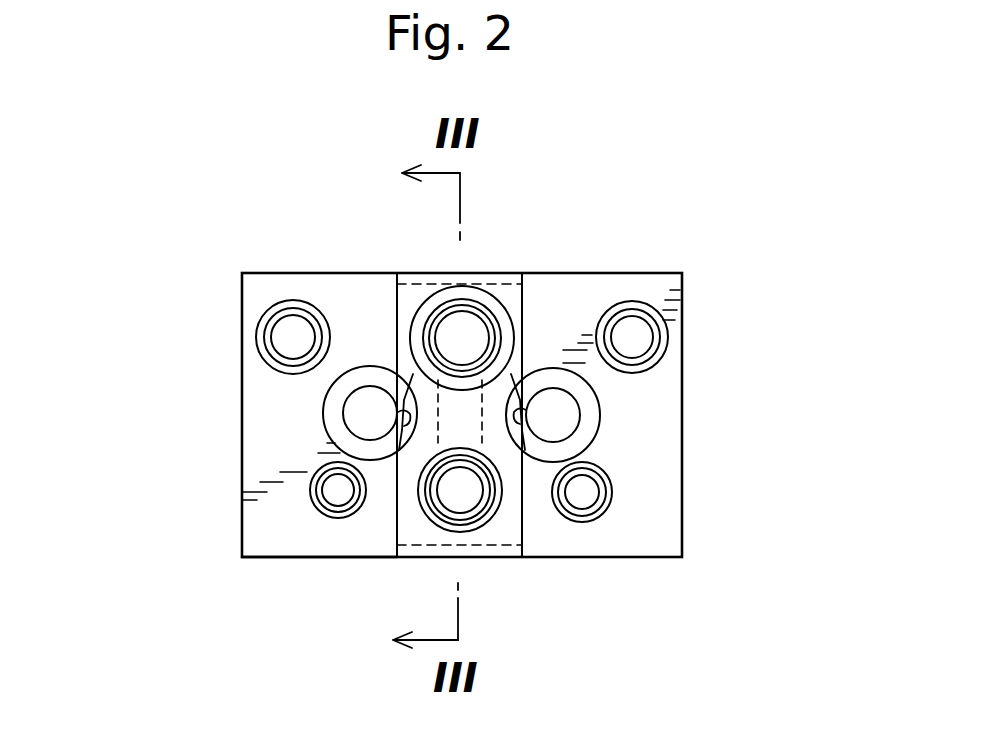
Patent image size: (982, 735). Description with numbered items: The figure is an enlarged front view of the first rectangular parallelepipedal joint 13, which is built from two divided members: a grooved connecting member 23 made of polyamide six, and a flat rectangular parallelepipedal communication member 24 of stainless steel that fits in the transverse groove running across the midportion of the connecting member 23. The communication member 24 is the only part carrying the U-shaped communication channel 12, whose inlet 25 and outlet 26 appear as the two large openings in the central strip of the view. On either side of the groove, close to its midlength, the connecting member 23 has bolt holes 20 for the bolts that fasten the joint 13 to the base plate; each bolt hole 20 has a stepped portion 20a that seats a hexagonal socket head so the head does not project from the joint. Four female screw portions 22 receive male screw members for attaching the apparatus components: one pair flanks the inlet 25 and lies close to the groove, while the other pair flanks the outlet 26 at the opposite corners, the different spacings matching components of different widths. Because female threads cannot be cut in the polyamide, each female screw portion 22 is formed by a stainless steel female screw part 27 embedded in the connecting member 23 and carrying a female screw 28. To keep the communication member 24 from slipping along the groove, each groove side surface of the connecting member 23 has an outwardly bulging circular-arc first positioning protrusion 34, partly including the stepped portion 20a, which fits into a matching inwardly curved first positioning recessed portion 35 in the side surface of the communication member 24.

The communication channel 12 is at (507, 455).
The first rectangular parallelepipedal joint 13 is at (783, 211).
The bolt hole 20 is at (357, 405).
The stepped portion 20a is at (333, 427).
The female screw portion 22 is at (308, 305).
The connecting member 23 is at (275, 551).
The communication member 24 is at (417, 548).
The inlet 25 is at (464, 505).
The outlet 26 is at (464, 327).
The female screw part 27 is at (263, 332).
The female screw 28 is at (283, 318).
The first positioning protrusion 34 is at (404, 400).
The first positioning recessed portion 35 is at (461, 414).